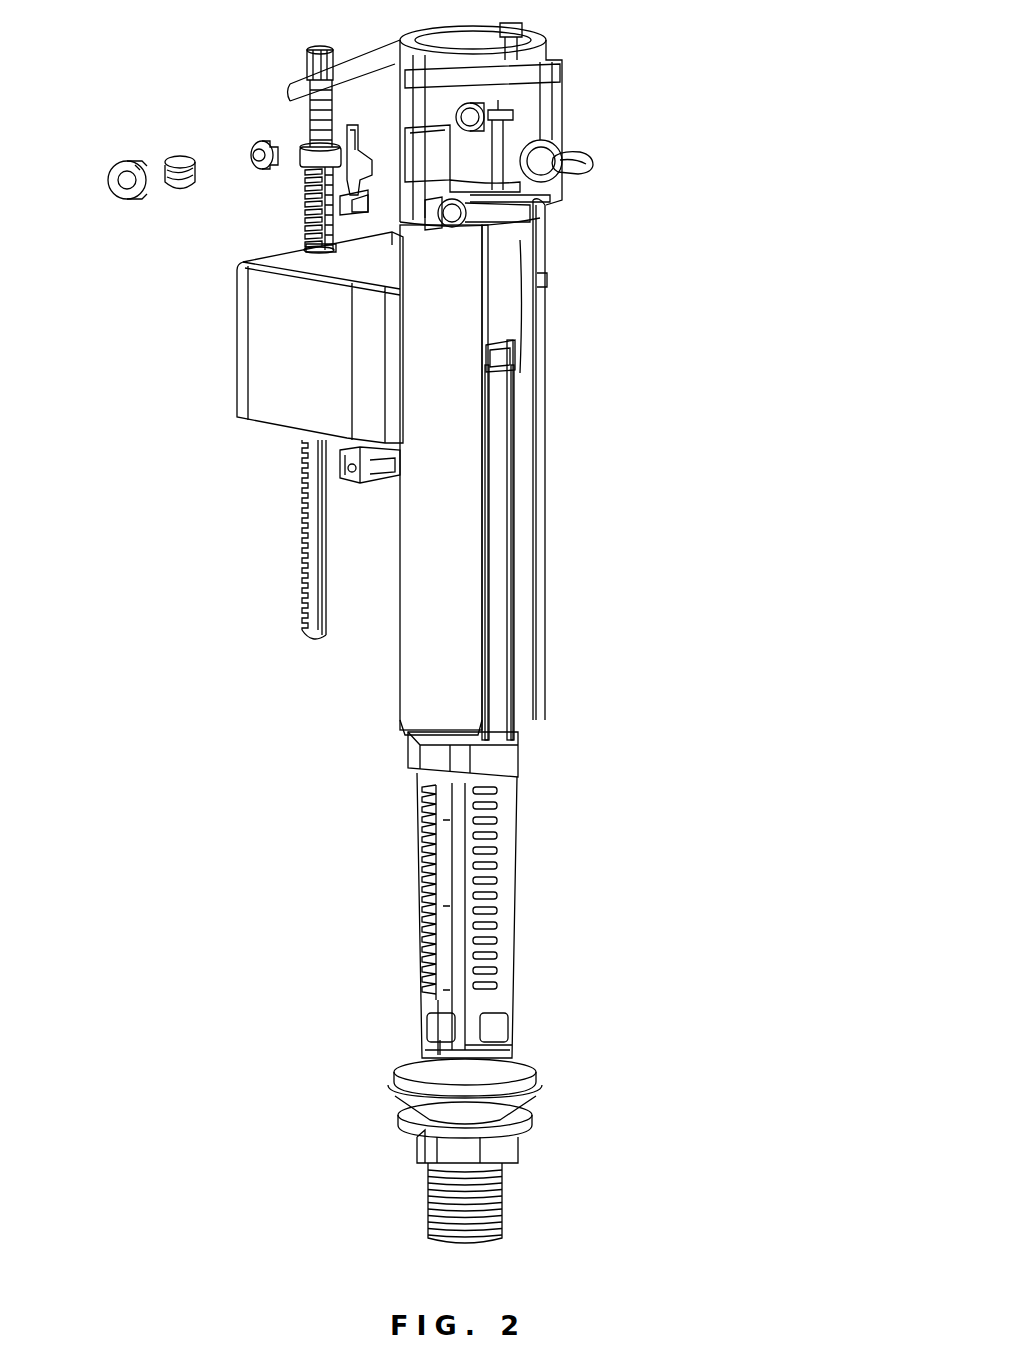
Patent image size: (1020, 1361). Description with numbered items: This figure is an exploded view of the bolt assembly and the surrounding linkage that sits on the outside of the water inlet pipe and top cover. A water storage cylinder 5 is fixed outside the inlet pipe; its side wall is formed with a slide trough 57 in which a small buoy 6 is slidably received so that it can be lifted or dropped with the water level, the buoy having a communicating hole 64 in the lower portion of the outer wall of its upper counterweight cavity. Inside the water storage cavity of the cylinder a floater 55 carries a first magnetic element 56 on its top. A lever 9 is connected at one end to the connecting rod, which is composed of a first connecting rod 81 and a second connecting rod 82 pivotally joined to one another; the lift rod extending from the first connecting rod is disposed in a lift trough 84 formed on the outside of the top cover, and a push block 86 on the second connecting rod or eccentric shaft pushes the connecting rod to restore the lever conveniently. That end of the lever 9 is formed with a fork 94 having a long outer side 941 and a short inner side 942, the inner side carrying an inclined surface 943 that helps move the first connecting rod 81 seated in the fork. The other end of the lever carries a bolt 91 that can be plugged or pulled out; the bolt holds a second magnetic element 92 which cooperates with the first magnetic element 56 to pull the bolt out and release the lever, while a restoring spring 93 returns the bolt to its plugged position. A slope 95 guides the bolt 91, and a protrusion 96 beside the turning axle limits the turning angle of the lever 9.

The water storage cylinder 5 is at (415, 645).
The small buoy 6 is at (502, 757).
The lever 9 is at (343, 157).
The floater 55 is at (470, 220).
The first magnetic element 56 is at (448, 210).
The slide trough 57 is at (508, 455).
The communicating hole 64 is at (497, 673).
The first connecting rod 81 is at (487, 207).
The second connecting rod 82 is at (548, 143).
The lift trough 84 is at (535, 95).
The push block 86 is at (567, 170).
The bolt 91 is at (243, 155).
The second magnetic element 92 is at (240, 153).
The restoring spring 93 is at (170, 157).
The fork 94 is at (228, 233).
The slope 95 is at (347, 147).
The protrusion 96 is at (517, 147).
The outer side 941 is at (348, 200).
The inner side 942 is at (375, 160).
The inclined surface 943 is at (345, 184).